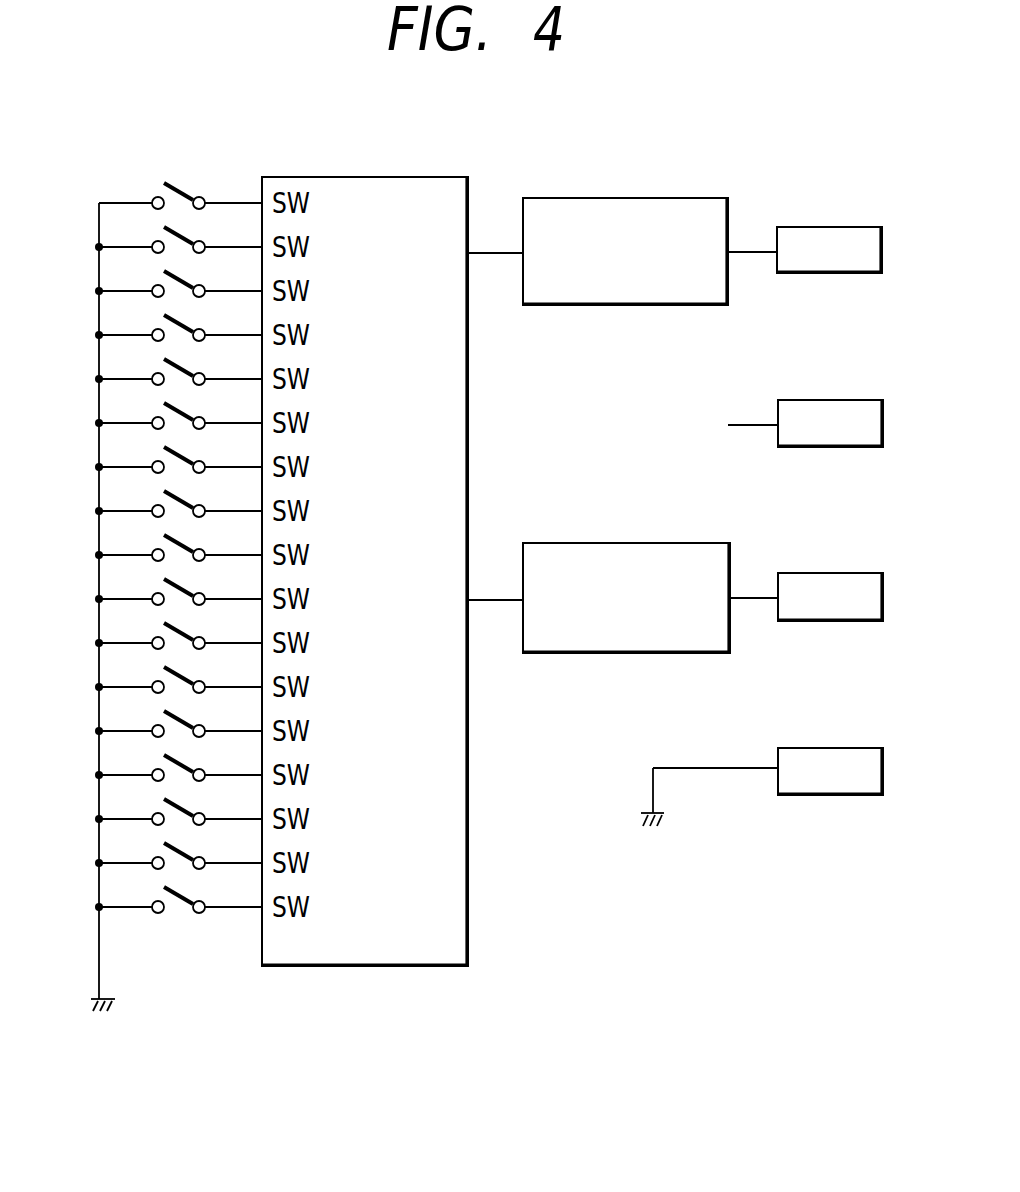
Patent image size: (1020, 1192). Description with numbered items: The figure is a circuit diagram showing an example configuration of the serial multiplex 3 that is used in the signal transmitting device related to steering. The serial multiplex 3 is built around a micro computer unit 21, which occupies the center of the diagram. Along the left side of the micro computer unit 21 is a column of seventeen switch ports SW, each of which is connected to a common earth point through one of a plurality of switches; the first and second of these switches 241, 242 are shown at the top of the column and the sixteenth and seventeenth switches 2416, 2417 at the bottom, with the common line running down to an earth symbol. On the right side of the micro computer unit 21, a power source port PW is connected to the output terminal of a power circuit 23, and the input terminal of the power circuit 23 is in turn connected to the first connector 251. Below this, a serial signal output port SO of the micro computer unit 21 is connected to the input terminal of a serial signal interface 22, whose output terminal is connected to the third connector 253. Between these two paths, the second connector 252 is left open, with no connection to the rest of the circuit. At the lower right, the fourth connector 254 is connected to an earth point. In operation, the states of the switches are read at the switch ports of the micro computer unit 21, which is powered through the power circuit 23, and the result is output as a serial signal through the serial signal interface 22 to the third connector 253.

The serial multiplex 3 is at (566, 148).
The micro computer unit (MCU) 21 is at (407, 176).
The serial signal interface (I/F) 22 is at (668, 541).
The power circuit 23 is at (668, 196).
The switch 241 is at (173, 212).
The switch 242 is at (173, 256).
The switch 2416 is at (180, 872).
The switch 2417 is at (180, 915).
The first connector (CON1) 251 is at (840, 223).
The second connector (CON2) 252 is at (840, 397).
The third connector (CON3) 253 is at (843, 572).
The fourth connector (CON4) 254 is at (843, 746).